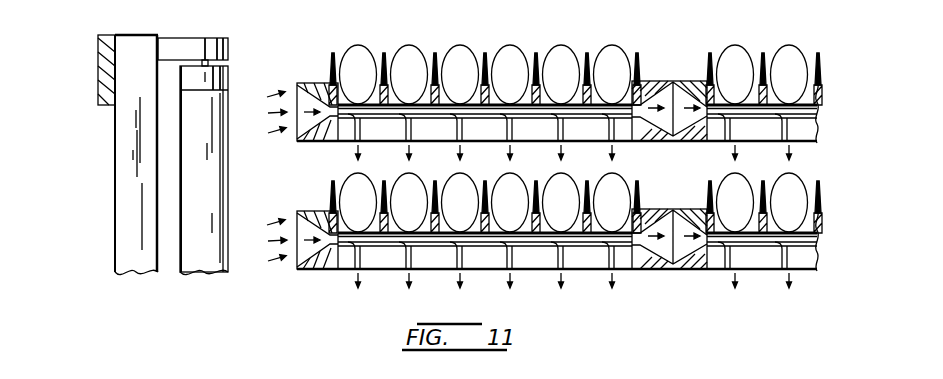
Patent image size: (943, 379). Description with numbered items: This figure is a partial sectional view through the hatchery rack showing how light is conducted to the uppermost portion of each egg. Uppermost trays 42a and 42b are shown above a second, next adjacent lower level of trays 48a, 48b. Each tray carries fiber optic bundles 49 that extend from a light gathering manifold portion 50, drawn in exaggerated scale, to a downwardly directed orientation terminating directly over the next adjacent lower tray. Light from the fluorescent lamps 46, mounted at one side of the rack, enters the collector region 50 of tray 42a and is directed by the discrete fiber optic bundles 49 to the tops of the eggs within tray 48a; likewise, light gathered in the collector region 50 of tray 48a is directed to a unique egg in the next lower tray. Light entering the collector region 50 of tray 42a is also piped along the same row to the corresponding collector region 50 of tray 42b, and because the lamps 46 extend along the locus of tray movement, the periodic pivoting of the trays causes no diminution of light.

The uppermost tray 42a is at (470, 27).
The uppermost tray 42b is at (822, 28).
The fluorescent lamps 46 is at (228, 78).
The lower level tray 48a is at (453, 251).
The lower level tray 48b is at (727, 248).
The fiber optic bundles 49 is at (740, 128).
The light gathering manifold portion 50 is at (320, 98).